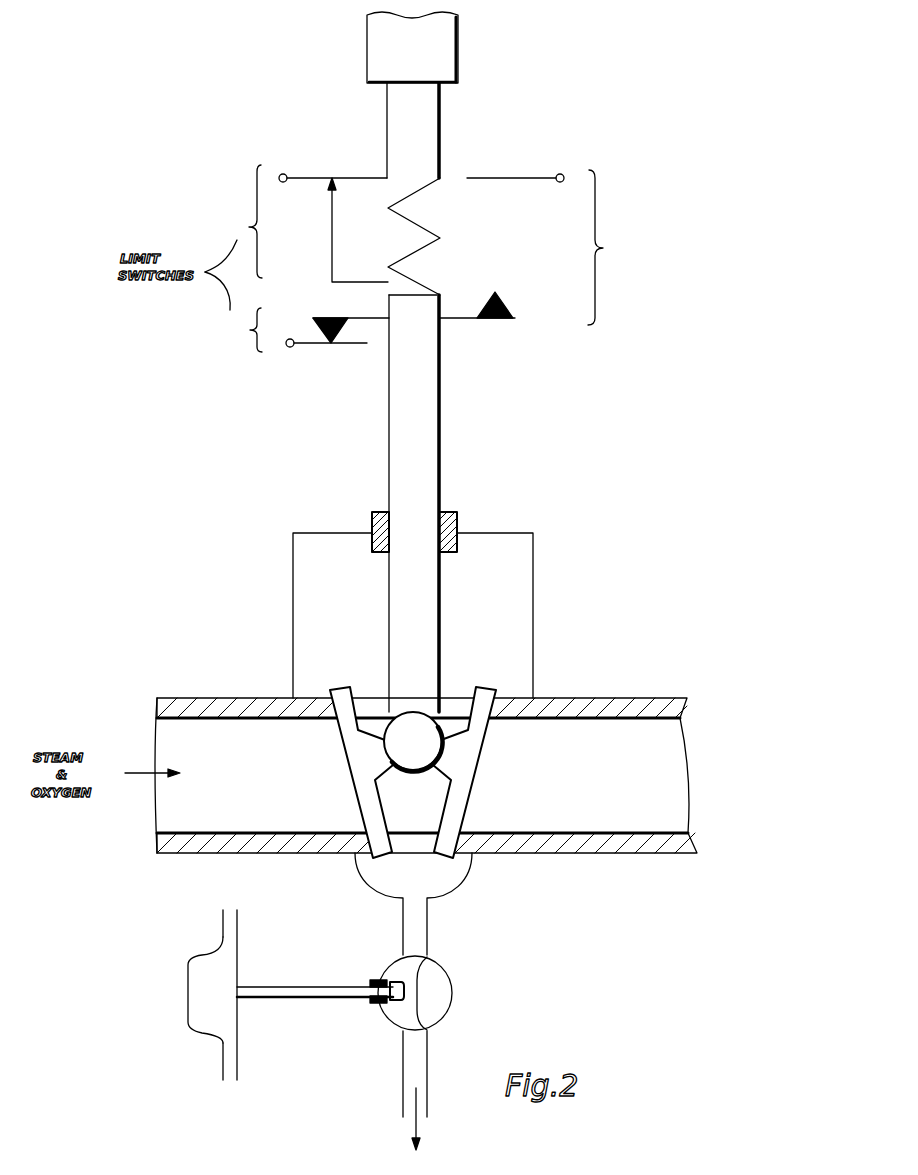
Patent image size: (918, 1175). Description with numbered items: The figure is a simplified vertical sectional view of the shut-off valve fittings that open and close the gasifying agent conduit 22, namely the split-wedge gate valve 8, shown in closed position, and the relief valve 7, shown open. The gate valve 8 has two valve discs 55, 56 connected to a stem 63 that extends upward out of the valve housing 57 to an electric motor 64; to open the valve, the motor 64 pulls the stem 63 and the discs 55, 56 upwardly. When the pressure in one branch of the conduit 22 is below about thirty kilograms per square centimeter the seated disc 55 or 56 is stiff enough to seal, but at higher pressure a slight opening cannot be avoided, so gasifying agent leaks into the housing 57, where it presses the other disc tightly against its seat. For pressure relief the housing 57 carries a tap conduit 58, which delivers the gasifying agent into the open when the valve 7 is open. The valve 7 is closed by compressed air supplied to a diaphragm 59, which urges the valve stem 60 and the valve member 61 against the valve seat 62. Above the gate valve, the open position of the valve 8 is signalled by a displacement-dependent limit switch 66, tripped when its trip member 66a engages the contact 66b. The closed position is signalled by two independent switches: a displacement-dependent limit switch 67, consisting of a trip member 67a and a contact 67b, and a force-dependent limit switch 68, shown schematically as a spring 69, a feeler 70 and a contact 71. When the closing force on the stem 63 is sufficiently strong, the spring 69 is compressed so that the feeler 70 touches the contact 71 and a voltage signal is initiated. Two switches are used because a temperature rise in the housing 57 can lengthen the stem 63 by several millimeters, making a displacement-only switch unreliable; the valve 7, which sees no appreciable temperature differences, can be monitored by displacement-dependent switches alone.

The valve 7 is at (305, 1038).
The split-wedge gate valve 8 is at (579, 609).
The gasifying agent conduit 22 is at (264, 794).
The valve disc 55 is at (372, 796).
The valve disc 56 is at (463, 752).
The valve housing 57 is at (293, 604).
The tap conduit 58 is at (420, 918).
The diaphragm 59 is at (194, 1008).
The valve stem 60 is at (293, 986).
The valve member 61 is at (392, 979).
The valve seat 62 is at (417, 981).
The stem 63 is at (441, 460).
The electric motor 64 is at (458, 75).
The displacement-dependent limit switch 66 is at (666, 247).
The trip member 66a is at (496, 322).
The contact 66b is at (508, 176).
The displacement-dependent limit switch 67 is at (238, 330).
The trip member 67a is at (331, 316).
The contact 67b is at (305, 348).
The force-dependent limit switch 68 is at (238, 221).
The spring 69 is at (427, 226).
The feeler 70 is at (333, 237).
The contact 71 is at (341, 176).